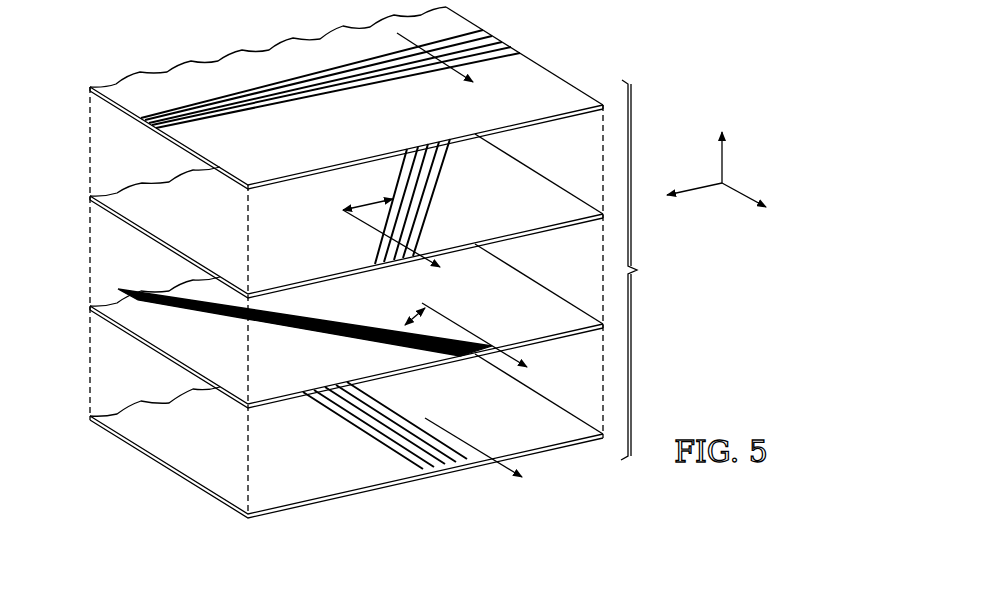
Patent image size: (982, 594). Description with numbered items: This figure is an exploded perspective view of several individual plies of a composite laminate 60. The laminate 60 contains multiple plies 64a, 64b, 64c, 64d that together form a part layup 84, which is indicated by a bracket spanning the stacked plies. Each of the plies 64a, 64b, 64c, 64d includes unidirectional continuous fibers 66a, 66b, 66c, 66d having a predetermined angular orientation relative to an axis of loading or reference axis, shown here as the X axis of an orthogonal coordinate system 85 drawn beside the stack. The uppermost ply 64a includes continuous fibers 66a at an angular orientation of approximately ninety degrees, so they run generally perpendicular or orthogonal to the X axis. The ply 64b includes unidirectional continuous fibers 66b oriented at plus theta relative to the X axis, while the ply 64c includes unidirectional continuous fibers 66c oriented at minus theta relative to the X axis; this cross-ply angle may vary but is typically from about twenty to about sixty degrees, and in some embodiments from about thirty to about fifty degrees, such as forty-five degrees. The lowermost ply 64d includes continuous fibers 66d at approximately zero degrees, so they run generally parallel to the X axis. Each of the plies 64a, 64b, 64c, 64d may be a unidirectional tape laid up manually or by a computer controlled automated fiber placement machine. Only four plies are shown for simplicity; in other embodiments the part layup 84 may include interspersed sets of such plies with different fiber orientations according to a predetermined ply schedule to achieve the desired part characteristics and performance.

The composite laminate 60 is at (135, 456).
The ply 64a is at (346, 98).
The ply 64b is at (346, 216).
The ply 64c is at (346, 326).
The ply 64d is at (346, 436).
The continuous fibers 66a is at (371, 90).
The continuous fibers 66b is at (439, 189).
The continuous fibers 66c is at (318, 333).
The continuous fibers 66d is at (360, 432).
The part layup 84 is at (644, 270).
The orthogonal coordinate system 85 is at (762, 156).